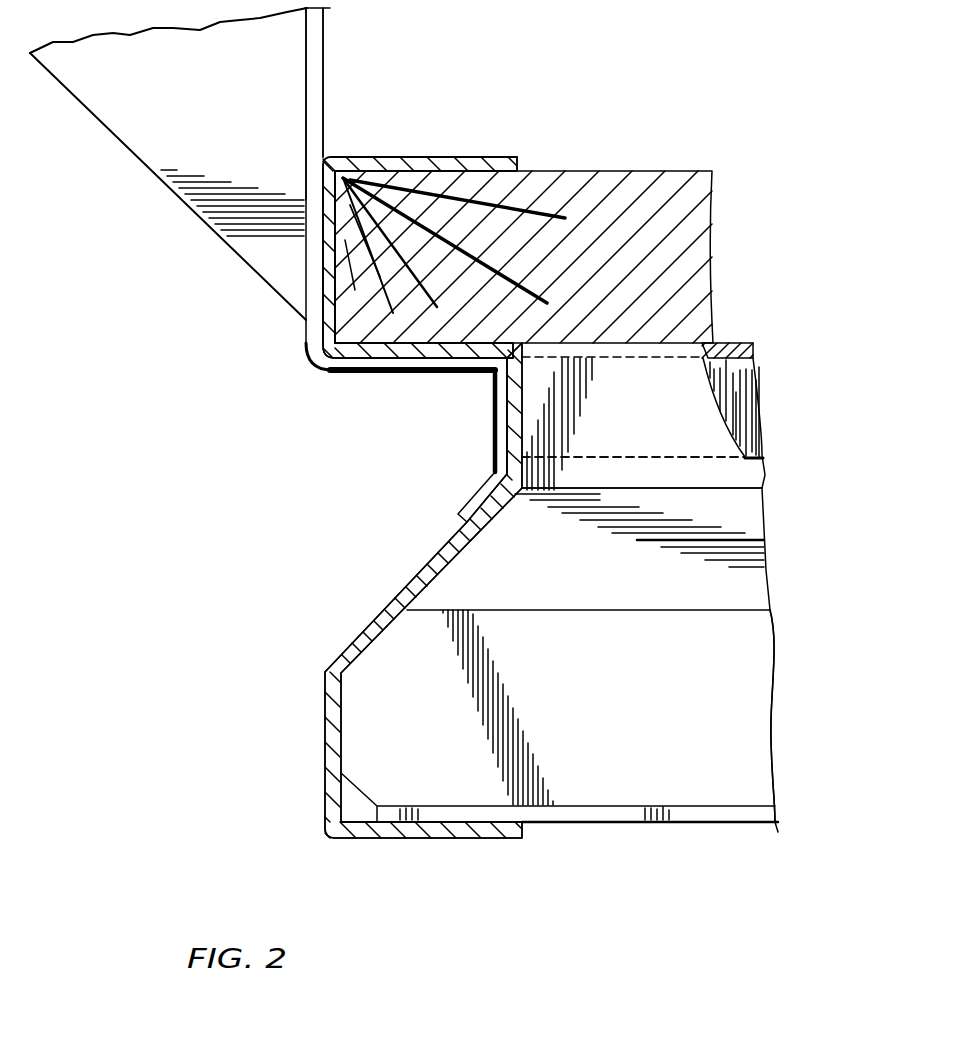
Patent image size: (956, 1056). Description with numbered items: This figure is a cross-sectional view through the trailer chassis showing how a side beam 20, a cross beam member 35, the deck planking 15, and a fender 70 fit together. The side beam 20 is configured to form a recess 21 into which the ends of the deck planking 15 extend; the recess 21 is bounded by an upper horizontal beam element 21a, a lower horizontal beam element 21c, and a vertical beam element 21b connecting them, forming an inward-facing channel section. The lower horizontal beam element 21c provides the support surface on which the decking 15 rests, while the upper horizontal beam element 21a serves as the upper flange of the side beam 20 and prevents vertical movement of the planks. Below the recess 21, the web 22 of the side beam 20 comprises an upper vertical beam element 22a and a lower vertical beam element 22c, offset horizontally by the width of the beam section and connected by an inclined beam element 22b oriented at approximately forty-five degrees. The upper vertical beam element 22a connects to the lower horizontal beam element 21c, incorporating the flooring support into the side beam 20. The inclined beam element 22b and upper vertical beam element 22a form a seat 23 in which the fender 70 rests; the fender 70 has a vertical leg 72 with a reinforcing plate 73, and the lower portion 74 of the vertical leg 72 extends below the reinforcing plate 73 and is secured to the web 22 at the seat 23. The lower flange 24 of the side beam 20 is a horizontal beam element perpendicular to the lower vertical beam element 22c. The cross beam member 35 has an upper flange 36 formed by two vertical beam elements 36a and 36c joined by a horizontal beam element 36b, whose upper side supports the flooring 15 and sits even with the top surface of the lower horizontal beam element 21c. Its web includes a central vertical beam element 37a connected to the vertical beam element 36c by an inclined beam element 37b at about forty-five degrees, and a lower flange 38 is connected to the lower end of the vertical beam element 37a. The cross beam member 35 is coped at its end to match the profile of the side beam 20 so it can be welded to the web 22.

The deck planking 15 is at (598, 180).
The side beam 20 is at (352, 150).
The recess 21 is at (325, 342).
The upper horizontal beam element 21a is at (407, 165).
The vertical beam element 21b is at (338, 306).
The lower horizontal beam element 21c is at (447, 350).
The web 22 is at (396, 588).
The upper vertical beam element 22a is at (522, 420).
The inclined beam element 22b is at (427, 566).
The lower vertical beam element 22c is at (332, 714).
The seat 23 is at (502, 449).
The lower flange 24 is at (443, 830).
The cross beam member 35 is at (771, 535).
The upper flange 36 is at (722, 342).
The vertical beam element 36a is at (743, 405).
The horizontal beam element 36b is at (740, 342).
The vertical beam element 36c is at (746, 474).
The vertical beam element 37a is at (757, 752).
The inclined beam element 37b is at (746, 588).
The lower flange 38 is at (752, 812).
The fender 70 is at (301, 99).
The vertical leg 72 is at (313, 85).
The reinforcing plate 73 is at (155, 145).
The lower portion of the vertical leg 74 is at (500, 422).